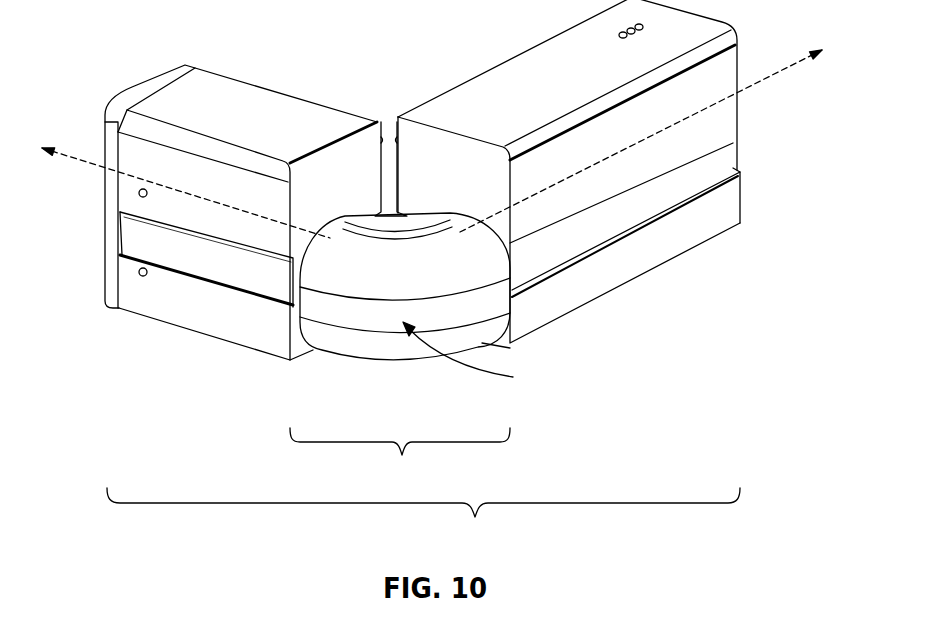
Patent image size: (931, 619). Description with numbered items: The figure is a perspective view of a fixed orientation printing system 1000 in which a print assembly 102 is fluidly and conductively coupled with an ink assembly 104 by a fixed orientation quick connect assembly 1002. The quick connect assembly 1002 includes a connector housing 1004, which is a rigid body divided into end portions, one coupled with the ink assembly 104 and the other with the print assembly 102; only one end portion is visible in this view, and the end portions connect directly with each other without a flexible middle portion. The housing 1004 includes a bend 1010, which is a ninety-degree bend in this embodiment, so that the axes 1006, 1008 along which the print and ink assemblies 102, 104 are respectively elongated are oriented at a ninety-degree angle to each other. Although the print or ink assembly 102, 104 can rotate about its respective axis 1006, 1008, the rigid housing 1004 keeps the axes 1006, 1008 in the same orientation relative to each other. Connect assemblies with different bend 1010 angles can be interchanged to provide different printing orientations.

The print assembly 102 is at (268, 112).
The ink assembly 104 is at (481, 93).
The fixed orientation printing system 1000 is at (423, 518).
The fixed orientation quick connect assembly 1002 is at (400, 304).
The connector housing 1004 is at (347, 345).
The axis of elongation of print assembly 1006 is at (88, 163).
The axis of elongation of ink assembly 1008 is at (770, 76).
The bend 1010 is at (486, 360).